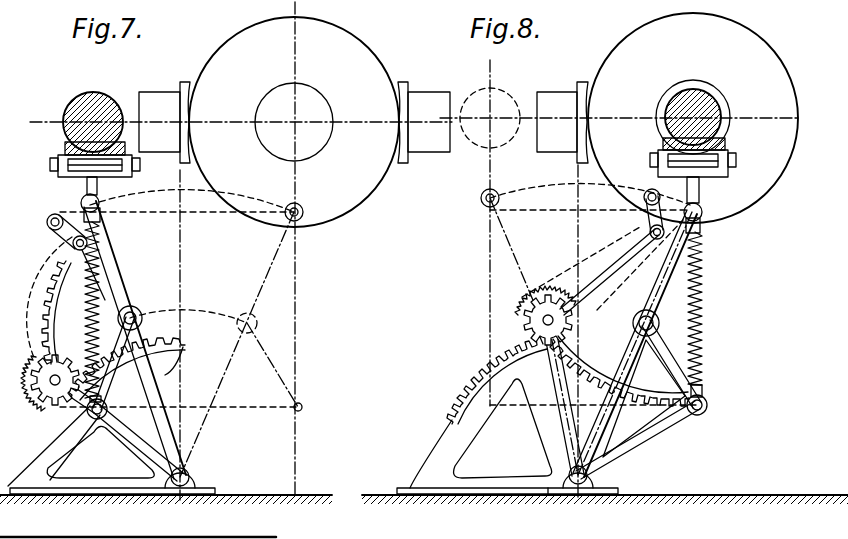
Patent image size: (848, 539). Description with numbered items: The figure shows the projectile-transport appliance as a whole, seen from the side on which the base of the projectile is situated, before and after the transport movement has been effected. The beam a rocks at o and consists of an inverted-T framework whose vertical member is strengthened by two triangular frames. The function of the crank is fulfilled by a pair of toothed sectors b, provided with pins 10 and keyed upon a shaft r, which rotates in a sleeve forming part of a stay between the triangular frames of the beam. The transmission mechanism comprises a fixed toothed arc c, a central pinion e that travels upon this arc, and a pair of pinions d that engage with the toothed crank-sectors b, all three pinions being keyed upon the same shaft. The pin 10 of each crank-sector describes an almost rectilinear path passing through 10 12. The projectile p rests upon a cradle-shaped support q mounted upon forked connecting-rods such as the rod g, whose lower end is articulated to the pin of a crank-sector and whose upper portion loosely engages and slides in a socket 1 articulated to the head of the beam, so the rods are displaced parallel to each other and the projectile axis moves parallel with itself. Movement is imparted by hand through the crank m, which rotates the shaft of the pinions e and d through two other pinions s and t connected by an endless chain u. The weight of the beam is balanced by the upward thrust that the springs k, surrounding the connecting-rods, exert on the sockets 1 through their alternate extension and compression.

In FIG. 7, the projectile p is at (86, 116).
In FIG. 8, the projectile p is at (490, 118).
In FIG. 7, the support q is at (76, 146).
In FIG. 8, the support q is at (722, 143).
In FIG. 7, the forked connecting-rod g is at (82, 213).
In FIG. 8, the forked connecting-rod g is at (730, 168).
In FIG. 7, the socket 1 is at (84, 199).
In FIG. 8, the socket 1 is at (701, 211).
In FIG. 7, the spring k is at (93, 312).
In FIG. 8, the spring k is at (703, 266).
In FIG. 7, the crank m is at (68, 241).
In FIG. 8, the crank m is at (646, 225).
In FIG. 7, the pinion s is at (76, 250).
In FIG. 8, the pinion s is at (641, 236).
In FIG. 7, the endless chain u is at (49, 298).
In FIG. 8, the endless chain u is at (588, 264).
In FIG. 7, the toothed sector b is at (64, 314).
In FIG. 8, the toothed sector b is at (660, 401).
In FIG. 7, the pinion t is at (44, 372).
In FIG. 8, the pinion t is at (528, 322).
In FIG. 7, the pinion d is at (50, 407).
In FIG. 8, the central pinion e is at (533, 310).
In FIG. 7, the shaft r is at (138, 311).
In FIG. 8, the shaft r is at (660, 323).
In FIG. 7, the beam a is at (150, 380).
In FIG. 8, the beam a is at (670, 290).
In FIG. 7, the fixed toothed arc c is at (160, 339).
In FIG. 8, the fixed toothed arc c is at (517, 368).
In FIG. 7, the pin 10 is at (97, 420).
In FIG. 8, the pin 10 is at (694, 413).
In FIG. 7, the path point 12 is at (286, 421).
In FIG. 7, the rocking axis o is at (199, 464).
In FIG. 8, the rocking axis o is at (590, 473).